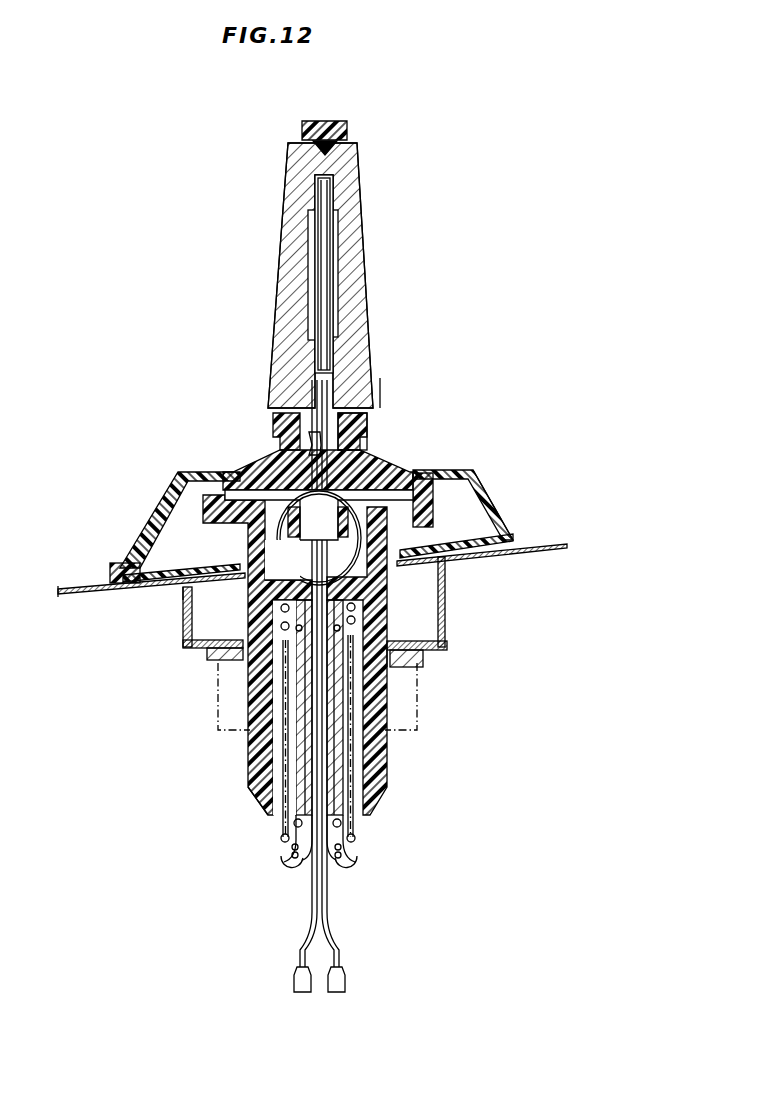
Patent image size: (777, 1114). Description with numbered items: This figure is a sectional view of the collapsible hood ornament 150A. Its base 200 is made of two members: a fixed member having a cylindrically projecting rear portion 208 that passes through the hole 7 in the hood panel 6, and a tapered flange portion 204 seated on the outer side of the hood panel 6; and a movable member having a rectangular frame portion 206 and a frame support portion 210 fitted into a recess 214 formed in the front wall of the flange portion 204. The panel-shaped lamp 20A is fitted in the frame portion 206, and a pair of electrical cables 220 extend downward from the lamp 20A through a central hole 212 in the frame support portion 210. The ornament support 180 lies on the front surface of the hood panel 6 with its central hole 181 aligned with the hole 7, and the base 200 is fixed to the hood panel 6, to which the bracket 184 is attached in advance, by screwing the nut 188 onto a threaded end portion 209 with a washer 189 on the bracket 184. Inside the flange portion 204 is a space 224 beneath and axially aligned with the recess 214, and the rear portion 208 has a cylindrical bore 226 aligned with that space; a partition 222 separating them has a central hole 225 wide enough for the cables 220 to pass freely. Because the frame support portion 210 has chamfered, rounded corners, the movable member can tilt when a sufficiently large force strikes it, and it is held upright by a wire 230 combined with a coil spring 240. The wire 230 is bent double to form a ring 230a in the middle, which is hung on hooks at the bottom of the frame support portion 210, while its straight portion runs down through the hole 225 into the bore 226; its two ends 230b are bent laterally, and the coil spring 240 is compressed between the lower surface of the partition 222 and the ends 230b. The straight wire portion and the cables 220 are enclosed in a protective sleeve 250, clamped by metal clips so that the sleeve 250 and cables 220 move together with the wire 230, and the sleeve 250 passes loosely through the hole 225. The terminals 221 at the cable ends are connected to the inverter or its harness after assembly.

The hood panel 6 is at (65, 590).
The hole 7 is at (245, 580).
The panel-shaped lamp 20A is at (322, 272).
The collapsible hood ornament 150A is at (380, 410).
The ornament support 180 is at (108, 570).
The central hole 181 is at (240, 565).
The bracket 184 is at (183, 600).
The nut 188 is at (418, 712).
The washer 189 is at (425, 656).
The base 200 is at (433, 467).
The tapered flange portion 204 is at (165, 522).
The frame portion 206 is at (345, 130).
The cylindrically projecting rear portion 208 is at (245, 632).
The threaded end portion 209 is at (252, 770).
The frame support portion 210 is at (263, 467).
The central hole 212 is at (330, 458).
The recess 214 is at (418, 490).
The electrical cables 220 is at (313, 423).
The terminals 221 is at (342, 978).
The partition 222 is at (215, 652).
The space 224 is at (400, 578).
The central hole 225 is at (390, 665).
The cylindrical bore 226 is at (340, 715).
The wire 230 is at (323, 748).
The ring 230a is at (487, 500).
The ends 230b is at (343, 867).
The coil spring 240 is at (283, 846).
The protective sleeve 250 is at (300, 743).